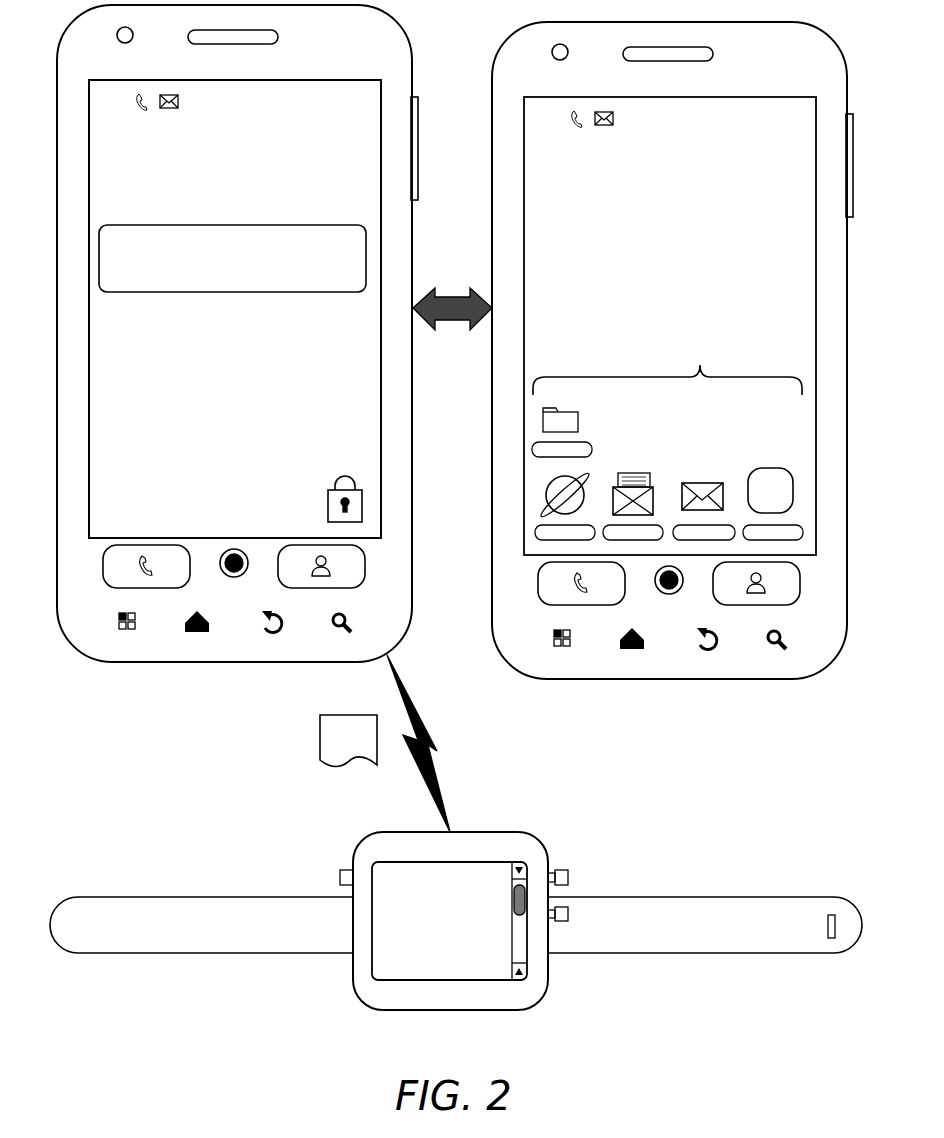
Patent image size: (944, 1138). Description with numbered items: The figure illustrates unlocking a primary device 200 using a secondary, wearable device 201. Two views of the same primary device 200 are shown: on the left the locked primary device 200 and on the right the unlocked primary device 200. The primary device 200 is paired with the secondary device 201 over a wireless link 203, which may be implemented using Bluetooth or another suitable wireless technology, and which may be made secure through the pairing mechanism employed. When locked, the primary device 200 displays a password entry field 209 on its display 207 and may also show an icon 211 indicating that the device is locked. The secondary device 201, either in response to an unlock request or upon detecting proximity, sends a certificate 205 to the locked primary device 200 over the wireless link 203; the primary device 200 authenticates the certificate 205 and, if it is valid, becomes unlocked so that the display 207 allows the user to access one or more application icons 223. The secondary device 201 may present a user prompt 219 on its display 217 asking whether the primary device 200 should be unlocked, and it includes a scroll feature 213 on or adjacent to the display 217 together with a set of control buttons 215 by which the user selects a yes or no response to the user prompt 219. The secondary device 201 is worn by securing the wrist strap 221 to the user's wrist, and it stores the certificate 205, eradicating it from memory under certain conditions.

The primary device 200 is at (366, 39).
The secondary device 201 is at (456, 901).
The wireless link 203 is at (432, 742).
The certificate 205 is at (333, 736).
The display 207 is at (315, 183).
The password entry field 209 is at (322, 261).
The icon 211 is at (363, 498).
The scroll feature 213 is at (523, 862).
The control buttons 215 is at (340, 873).
The display 217 is at (393, 873).
The user prompt 219 is at (378, 913).
The wrist strap 221 is at (632, 937).
The application icons 223 is at (667, 438).